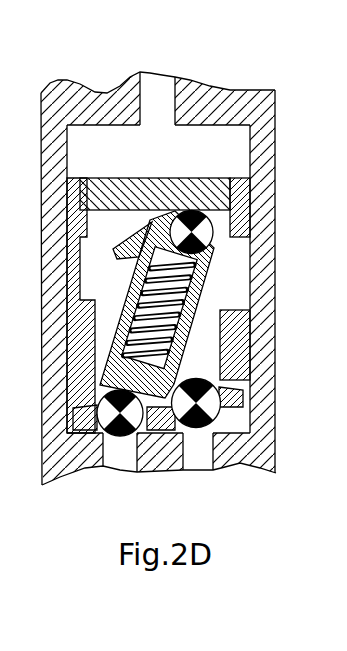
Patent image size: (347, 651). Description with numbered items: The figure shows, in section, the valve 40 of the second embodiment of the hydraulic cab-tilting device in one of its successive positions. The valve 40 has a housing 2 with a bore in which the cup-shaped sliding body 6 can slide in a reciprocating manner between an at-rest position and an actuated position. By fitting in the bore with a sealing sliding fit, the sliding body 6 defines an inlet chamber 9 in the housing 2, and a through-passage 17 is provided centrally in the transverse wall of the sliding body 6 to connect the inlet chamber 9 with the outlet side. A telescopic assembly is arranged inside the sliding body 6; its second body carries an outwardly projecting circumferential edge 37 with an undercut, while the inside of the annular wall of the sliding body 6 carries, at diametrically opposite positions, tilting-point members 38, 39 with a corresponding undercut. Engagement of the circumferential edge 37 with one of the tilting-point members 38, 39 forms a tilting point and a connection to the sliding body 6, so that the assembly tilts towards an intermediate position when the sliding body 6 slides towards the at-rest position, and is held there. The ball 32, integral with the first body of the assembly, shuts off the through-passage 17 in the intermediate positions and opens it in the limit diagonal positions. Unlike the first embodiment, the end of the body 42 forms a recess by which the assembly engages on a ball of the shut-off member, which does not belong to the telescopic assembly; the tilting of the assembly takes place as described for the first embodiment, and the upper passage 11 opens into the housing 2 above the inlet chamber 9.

The housing 2 is at (267, 153).
The sliding body 6 is at (240, 187).
The inlet chamber 9 is at (213, 147).
The bore 11 is at (155, 88).
The through-passage 17 is at (158, 193).
The second ball 32 is at (198, 229).
The circumferential edge 37 is at (235, 273).
The tilting-point member 38 is at (67, 335).
The tilting-point member 39 is at (235, 308).
The valve 40 is at (121, 391).
The body 42 is at (193, 340).